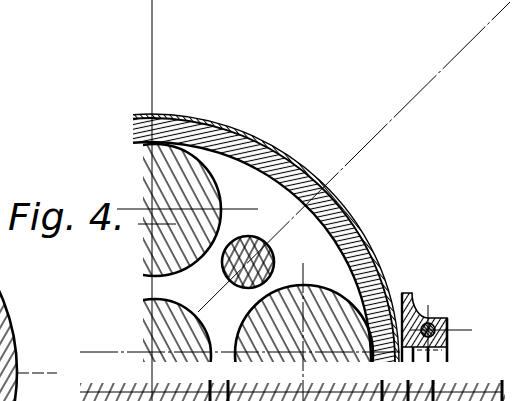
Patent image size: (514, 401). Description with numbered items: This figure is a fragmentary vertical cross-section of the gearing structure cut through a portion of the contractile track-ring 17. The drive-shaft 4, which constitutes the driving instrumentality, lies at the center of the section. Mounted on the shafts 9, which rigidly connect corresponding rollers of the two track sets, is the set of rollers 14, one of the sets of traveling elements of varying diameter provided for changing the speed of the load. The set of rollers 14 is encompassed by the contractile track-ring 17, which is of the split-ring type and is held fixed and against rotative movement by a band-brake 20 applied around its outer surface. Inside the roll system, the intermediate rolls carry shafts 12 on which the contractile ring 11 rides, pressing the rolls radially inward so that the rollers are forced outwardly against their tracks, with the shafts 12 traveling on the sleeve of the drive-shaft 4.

The drive-shaft 4 is at (155, 320).
The shaft 9 is at (17, 348).
The ring 11 is at (11, 271).
The shaft 12 is at (275, 259).
The set of rollers 14 is at (221, 200).
The contractile track-ring 17 is at (260, 148).
The band-brake 20 is at (295, 158).